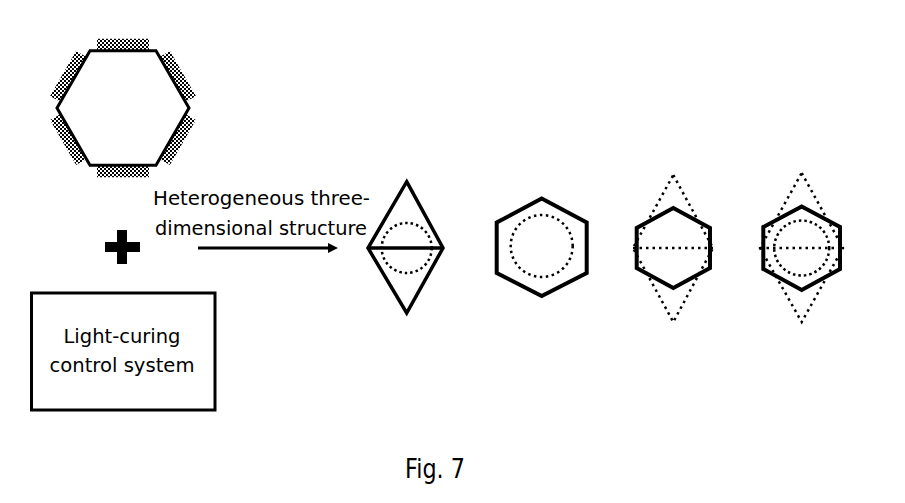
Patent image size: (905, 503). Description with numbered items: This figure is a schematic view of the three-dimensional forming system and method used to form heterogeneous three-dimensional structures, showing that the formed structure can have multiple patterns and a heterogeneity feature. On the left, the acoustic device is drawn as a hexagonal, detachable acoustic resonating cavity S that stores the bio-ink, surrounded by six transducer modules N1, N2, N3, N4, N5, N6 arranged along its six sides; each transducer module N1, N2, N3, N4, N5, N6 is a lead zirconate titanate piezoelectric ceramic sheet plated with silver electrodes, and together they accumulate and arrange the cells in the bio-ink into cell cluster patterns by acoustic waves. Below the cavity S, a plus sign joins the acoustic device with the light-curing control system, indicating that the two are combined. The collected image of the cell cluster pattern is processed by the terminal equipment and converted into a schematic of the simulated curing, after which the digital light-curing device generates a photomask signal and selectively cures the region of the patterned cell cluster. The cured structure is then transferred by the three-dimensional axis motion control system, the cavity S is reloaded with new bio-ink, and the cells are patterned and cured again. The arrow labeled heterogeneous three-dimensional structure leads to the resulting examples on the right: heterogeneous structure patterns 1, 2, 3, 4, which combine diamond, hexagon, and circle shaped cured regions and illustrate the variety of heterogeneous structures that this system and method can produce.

The acoustic resonating cavity S is at (123, 108).
The transducer module N1 is at (64, 76).
The transducer module N2 is at (123, 36).
The transducer module N3 is at (181, 76).
The transducer module N4 is at (181, 139).
The transducer module N5 is at (123, 183).
The transducer module N6 is at (64, 139).
The heterogeneous structure pattern 1 is at (405, 222).
The heterogeneous structure pattern 2 is at (542, 213).
The heterogeneous structure pattern 3 is at (673, 226).
The heterogeneous structure pattern 4 is at (801, 226).